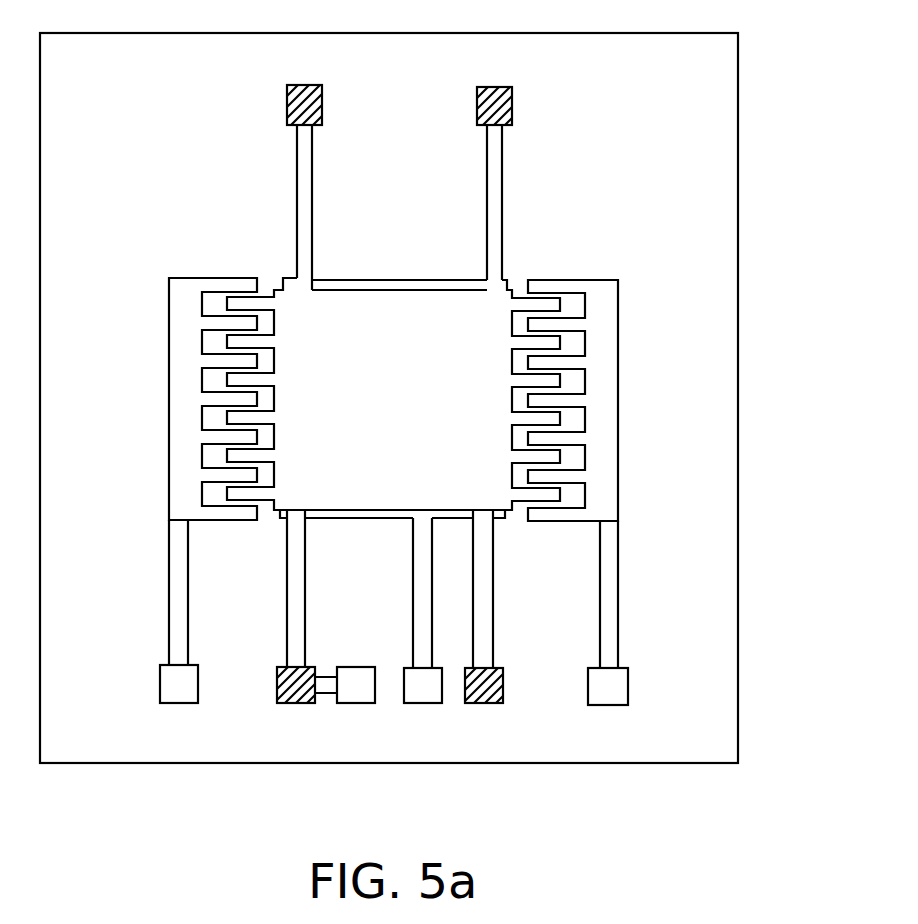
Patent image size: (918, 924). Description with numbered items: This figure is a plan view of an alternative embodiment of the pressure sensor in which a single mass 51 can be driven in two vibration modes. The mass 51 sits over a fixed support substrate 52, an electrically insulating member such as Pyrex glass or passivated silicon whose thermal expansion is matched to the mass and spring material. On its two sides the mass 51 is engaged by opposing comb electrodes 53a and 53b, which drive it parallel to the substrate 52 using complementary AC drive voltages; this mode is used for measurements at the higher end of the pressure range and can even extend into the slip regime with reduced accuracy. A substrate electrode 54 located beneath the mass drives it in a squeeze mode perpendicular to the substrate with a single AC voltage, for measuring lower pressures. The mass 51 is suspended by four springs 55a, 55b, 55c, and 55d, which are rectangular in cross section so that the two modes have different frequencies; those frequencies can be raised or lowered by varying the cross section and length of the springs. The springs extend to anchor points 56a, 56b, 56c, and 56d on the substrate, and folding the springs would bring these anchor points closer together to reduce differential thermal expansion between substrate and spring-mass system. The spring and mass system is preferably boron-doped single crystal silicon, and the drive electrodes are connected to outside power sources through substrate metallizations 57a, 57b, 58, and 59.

The mass 51 is at (466, 312).
The fixed support substrate 52 is at (736, 410).
The comb electrode 53a is at (614, 322).
The comb electrode 53b is at (171, 344).
The substrate electrode 54 is at (406, 278).
The spring 55a is at (486, 569).
The spring 55b is at (487, 165).
The spring 55c is at (297, 160).
The spring 55d is at (287, 605).
The anchor point 56a is at (477, 705).
The anchor point 56b is at (493, 87).
The anchor point 56c is at (302, 85).
The anchor point 56d is at (292, 705).
The substrate metallization 57a is at (628, 688).
The substrate metallization 57b is at (160, 685).
The substrate metallization 58 is at (423, 669).
The substrate metallization 59 is at (345, 742).